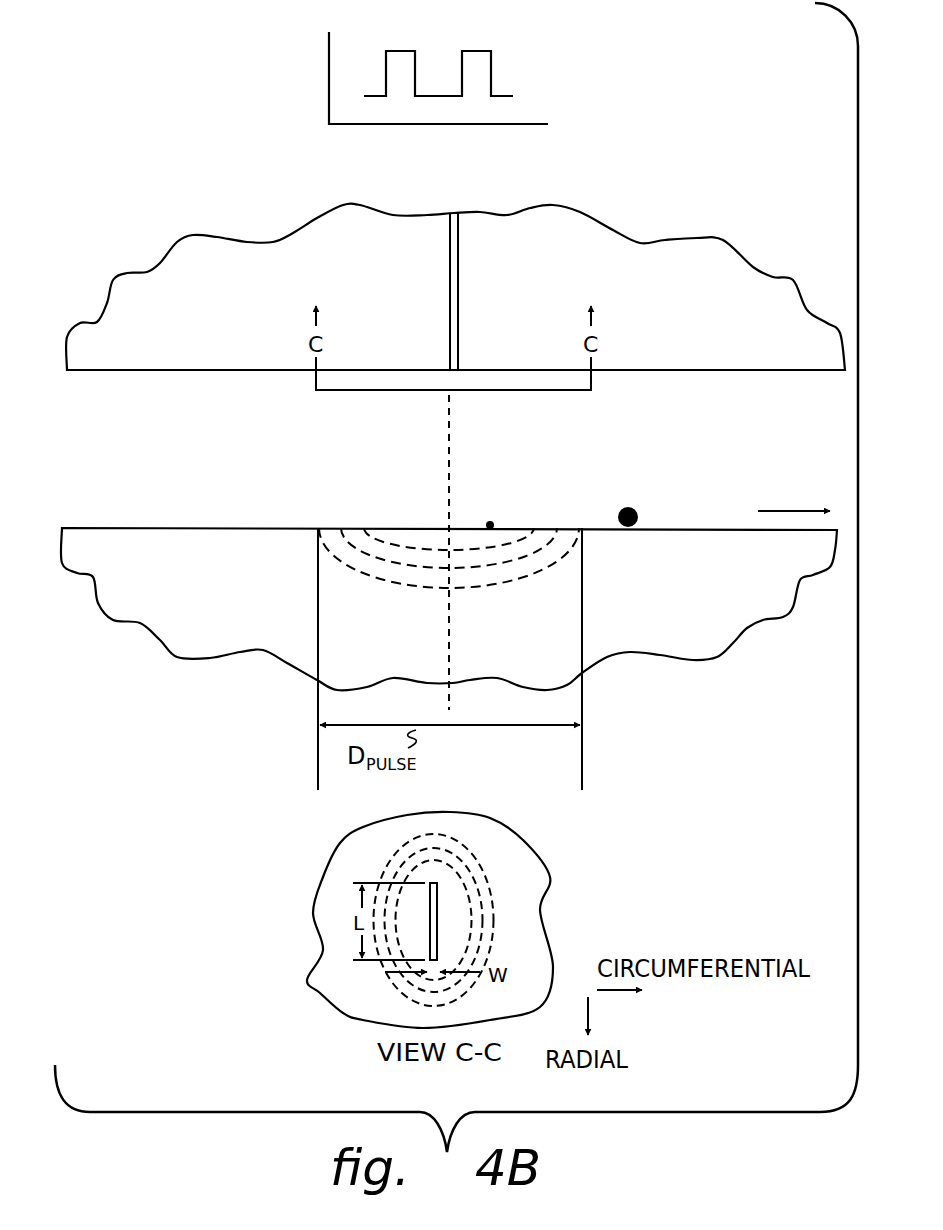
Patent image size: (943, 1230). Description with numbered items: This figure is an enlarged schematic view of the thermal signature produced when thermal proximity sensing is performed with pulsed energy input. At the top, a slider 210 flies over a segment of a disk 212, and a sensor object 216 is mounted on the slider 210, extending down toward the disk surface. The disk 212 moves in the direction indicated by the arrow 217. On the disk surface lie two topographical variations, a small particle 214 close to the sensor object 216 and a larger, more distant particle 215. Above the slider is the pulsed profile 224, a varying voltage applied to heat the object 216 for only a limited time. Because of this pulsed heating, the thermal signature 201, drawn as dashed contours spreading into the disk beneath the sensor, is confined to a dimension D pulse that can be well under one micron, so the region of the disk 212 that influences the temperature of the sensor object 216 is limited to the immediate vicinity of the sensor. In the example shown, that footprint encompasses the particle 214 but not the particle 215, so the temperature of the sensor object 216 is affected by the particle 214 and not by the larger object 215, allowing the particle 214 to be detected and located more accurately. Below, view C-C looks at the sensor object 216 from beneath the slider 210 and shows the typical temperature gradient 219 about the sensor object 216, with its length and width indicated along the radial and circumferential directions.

The thermal signature 201 is at (522, 561).
The slider 210 is at (316, 219).
The disk 212 is at (687, 660).
The particle 214 is at (492, 521).
The particle 215 is at (639, 517).
The sensor object 216 is at (458, 302).
The arrow 217 is at (788, 510).
The temperature gradient 219 is at (538, 930).
The pulsed profile 224 is at (480, 52).